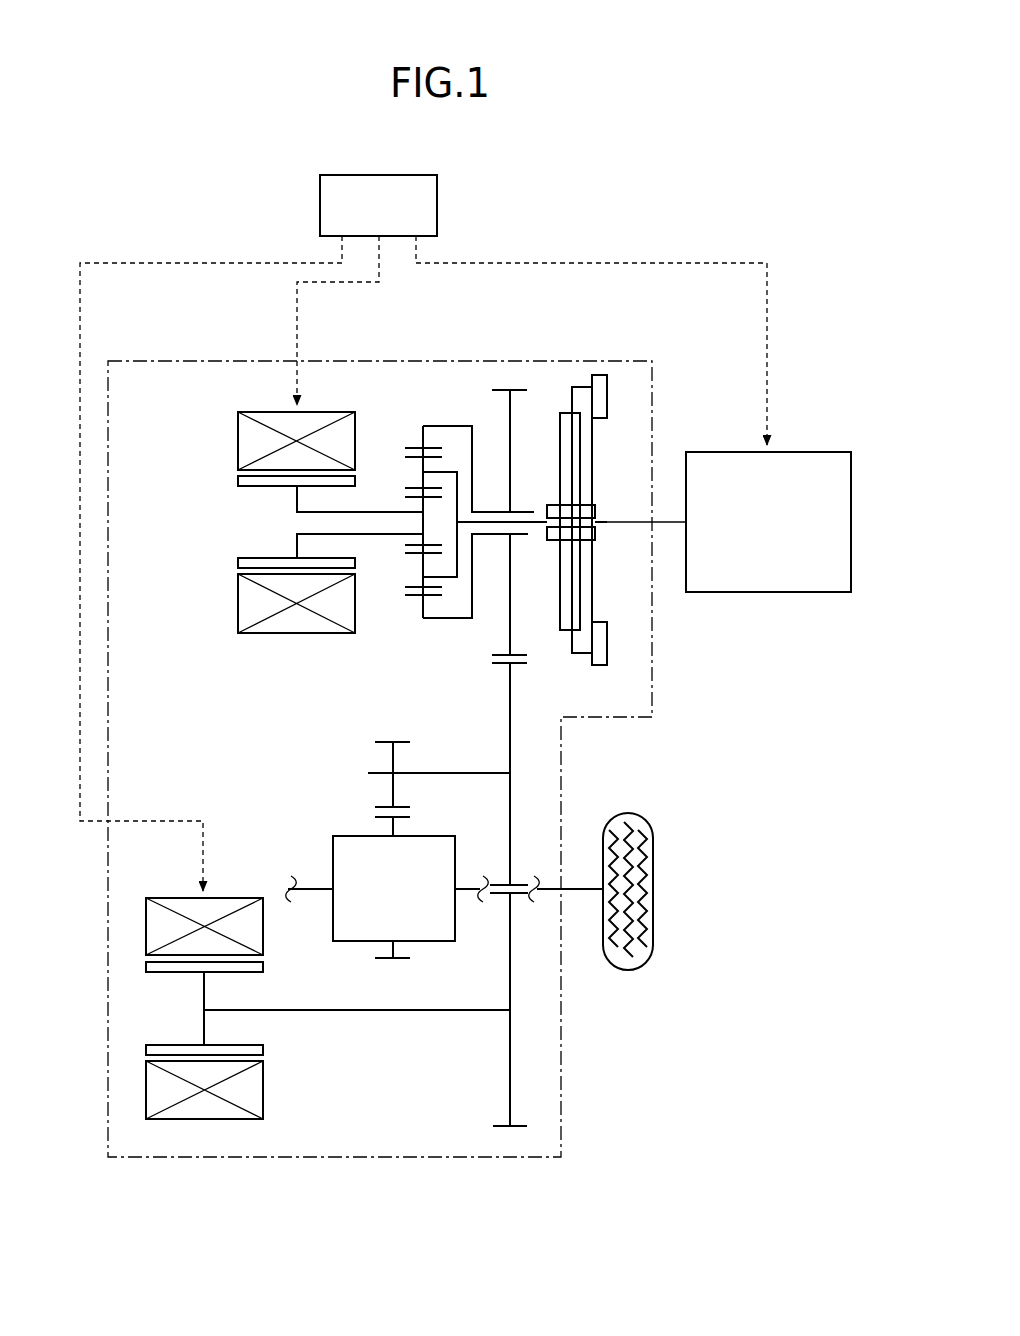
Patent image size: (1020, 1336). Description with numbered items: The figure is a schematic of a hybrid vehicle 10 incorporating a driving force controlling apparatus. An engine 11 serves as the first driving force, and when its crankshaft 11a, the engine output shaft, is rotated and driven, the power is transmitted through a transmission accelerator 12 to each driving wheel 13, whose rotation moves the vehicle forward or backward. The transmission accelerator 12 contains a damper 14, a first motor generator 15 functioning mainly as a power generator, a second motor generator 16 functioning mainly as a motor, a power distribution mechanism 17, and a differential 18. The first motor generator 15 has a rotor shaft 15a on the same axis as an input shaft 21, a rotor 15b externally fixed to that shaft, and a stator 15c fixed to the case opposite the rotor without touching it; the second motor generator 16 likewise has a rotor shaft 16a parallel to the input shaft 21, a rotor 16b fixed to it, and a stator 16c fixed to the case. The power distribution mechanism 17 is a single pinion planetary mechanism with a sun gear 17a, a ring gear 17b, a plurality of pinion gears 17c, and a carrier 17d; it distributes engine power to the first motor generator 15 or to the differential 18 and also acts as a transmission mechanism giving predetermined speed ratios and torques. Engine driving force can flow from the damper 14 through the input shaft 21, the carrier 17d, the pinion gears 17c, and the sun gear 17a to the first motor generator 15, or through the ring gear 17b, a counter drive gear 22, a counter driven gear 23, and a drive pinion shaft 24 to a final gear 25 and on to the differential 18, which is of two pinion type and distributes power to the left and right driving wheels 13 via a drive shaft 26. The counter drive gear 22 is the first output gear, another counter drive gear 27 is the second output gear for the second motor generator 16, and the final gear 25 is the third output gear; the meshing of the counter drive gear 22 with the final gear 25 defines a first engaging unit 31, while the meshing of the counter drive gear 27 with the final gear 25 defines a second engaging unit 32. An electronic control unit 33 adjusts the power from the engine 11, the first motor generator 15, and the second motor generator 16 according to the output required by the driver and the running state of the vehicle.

The hybrid vehicle 10 is at (692, 241).
The engine 11 is at (810, 444).
The crankshaft 11a is at (617, 520).
The transmission accelerator 12 is at (612, 352).
The driving wheel 13 is at (645, 840).
The damper 14 is at (562, 390).
The first motor generator 15 is at (279, 473).
The rotor shaft 15a is at (297, 496).
The rotor 15b is at (240, 481).
The stator 15c is at (240, 433).
The second motor generator 16 is at (274, 1022).
The rotor shaft 16a is at (370, 1012).
The rotor 16b is at (146, 968).
The stator 16c is at (152, 931).
The power distribution mechanism 17 is at (449, 482).
The sun gear 17a is at (407, 545).
The ring gear 17b is at (423, 620).
The pinion gears 17c is at (423, 467).
The carrier 17d is at (448, 470).
The differential 18 is at (345, 855).
The input shaft 21 is at (541, 505).
The counter drive gear 22 is at (510, 550).
The counter driven gear 23 is at (513, 792).
The drive pinion shaft 24 is at (378, 773).
The final gear 25 is at (393, 790).
The drive shaft 26 is at (308, 893).
The counter drive gear 27 is at (512, 1043).
The first engaging unit 31 is at (544, 672).
The second engaging unit 32 is at (534, 856).
The electronic control unit 33 is at (437, 200).